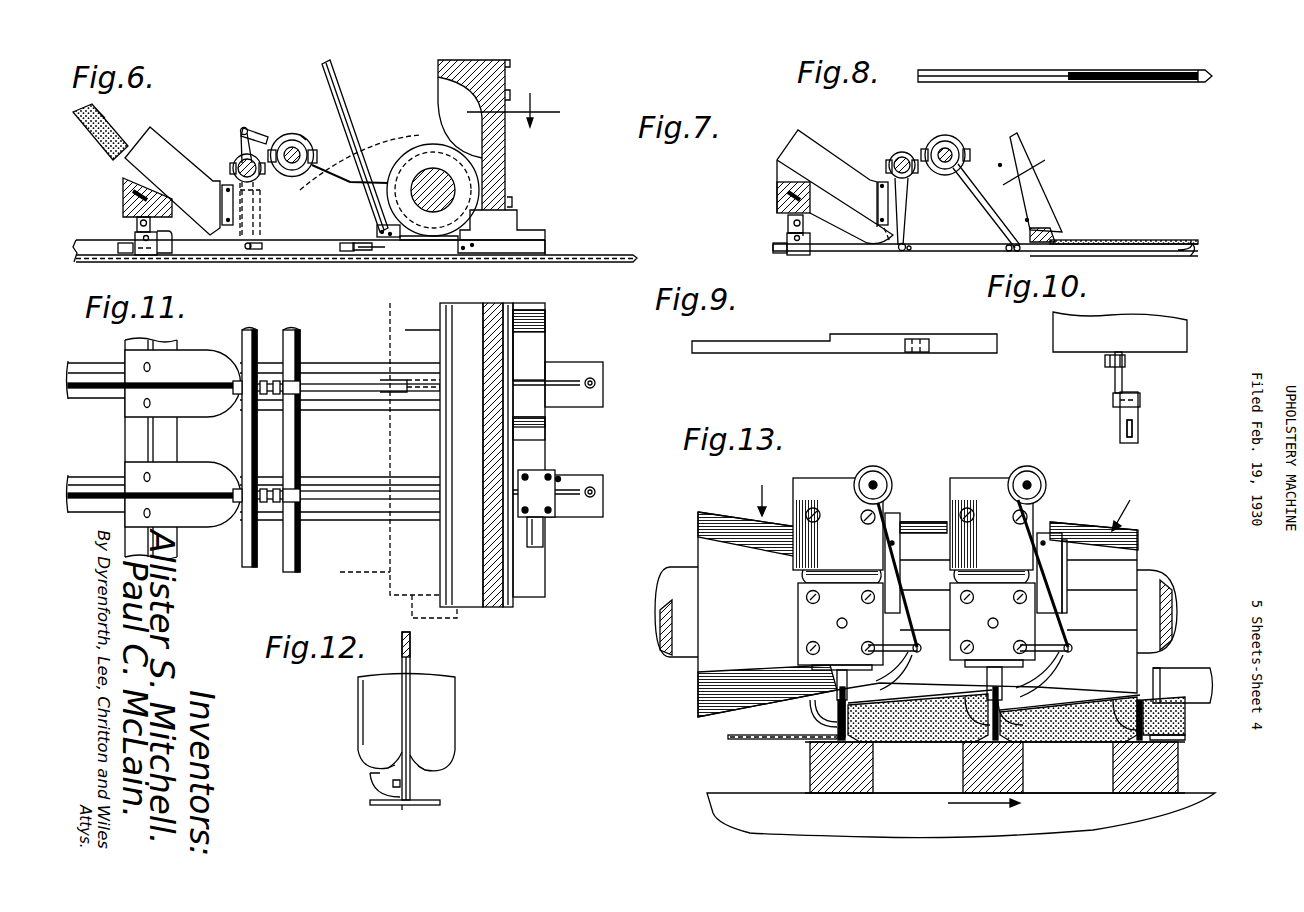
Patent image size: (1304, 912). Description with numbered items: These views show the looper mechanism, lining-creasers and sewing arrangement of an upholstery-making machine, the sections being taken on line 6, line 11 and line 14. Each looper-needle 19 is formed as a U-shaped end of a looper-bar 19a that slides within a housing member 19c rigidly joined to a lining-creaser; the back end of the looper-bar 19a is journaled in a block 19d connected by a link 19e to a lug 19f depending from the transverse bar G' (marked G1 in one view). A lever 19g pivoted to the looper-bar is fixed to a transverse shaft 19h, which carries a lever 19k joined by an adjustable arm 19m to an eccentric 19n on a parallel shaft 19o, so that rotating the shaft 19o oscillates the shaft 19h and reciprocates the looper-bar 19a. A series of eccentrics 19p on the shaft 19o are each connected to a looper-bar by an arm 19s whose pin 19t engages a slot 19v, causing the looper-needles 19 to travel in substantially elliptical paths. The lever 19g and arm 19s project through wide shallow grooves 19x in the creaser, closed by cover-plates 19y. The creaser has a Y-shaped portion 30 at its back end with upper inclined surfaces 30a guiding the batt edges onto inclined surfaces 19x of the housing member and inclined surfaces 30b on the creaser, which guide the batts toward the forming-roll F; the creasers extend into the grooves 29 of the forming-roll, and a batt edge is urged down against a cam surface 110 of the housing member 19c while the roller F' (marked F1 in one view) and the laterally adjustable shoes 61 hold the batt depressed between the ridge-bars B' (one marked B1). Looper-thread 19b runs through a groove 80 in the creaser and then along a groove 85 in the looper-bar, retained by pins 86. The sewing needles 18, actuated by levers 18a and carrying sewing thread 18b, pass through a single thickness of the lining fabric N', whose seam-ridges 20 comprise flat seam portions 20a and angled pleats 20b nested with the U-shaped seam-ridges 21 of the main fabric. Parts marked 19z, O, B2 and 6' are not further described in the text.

In FIG. 7, the looper-needle 19 is at (1167, 257).
In FIG. 6, the looper-bar 19a is at (298, 247).
In FIG. 7, the looper-bar 19a is at (930, 250).
In FIG. 10, the looper-bar 19a is at (1133, 427).
In FIG. 6, the looper-needle thread 19b is at (228, 183).
In FIG. 7, the looper-needle thread 19b is at (878, 177).
In FIG. 8, the looper-needle thread 19b is at (1210, 83).
In FIG. 7, the housing member 19c is at (1067, 240).
In FIG. 9, the housing member 19c is at (853, 341).
In FIG. 10, the housing member 19c is at (1123, 378).
In FIG. 12, the housing member 19c is at (376, 803).
In FIG. 6, the block 19d is at (137, 253).
In FIG. 7, the block 19d is at (797, 256).
In FIG. 10, the block 19d is at (1138, 424).
In FIG. 6, the link 19e is at (167, 240).
In FIG. 7, the link 19e is at (788, 233).
In FIG. 6, the lug 19f is at (137, 222).
In FIG. 7, the lug 19f is at (788, 219).
In FIG. 10, the lug 19f is at (1100, 358).
In FIG. 6, the lever 19g is at (257, 250).
In FIG. 7, the lever 19g is at (903, 218).
In FIG. 6, the shaft 19h is at (233, 166).
In FIG. 11, the shaft 19h is at (249, 560).
In FIG. 6, the lever 19k is at (243, 150).
In FIG. 7, the lever 19k is at (898, 153).
In FIG. 6, the adjustable arm 19m is at (268, 140).
In FIG. 6, the eccentric 19n is at (305, 137).
In FIG. 6, the shaft 19o is at (313, 150).
In FIG. 7, the shaft 19o is at (941, 147).
In FIG. 11, the shaft 19o is at (292, 566).
In FIG. 6, the eccentric 19p is at (340, 178).
In FIG. 7, the eccentric 19p is at (963, 142).
In FIG. 6, the arm 19s is at (400, 170).
In FIG. 7, the arm 19s is at (1027, 197).
In FIG. 6, the pin 19t is at (352, 262).
In FIG. 6, the slot 19v is at (365, 250).
In FIG. 7, the groove 19x is at (1020, 175).
In FIG. 11, the groove 19x is at (330, 385).
In FIG. 11, the cover-plate 19y is at (345, 393).
In FIG. 6, the bracket 19z is at (283, 235).
In FIG. 11, the bracket 19z is at (385, 395).
In FIG. 12, the bracket 19z is at (370, 778).
In FIG. 6, the Y-shaped portion 30 is at (155, 192).
In FIG. 11, the Y-shaped portion 30 is at (186, 419).
In FIG. 12, the Y-shaped portion 30 is at (358, 700).
In FIG. 6, the upper inclined surface 30a is at (120, 164).
In FIG. 11, the upper inclined surface 30a is at (132, 373).
In FIG. 12, the upper inclined surface 30a is at (368, 742).
In FIG. 11, the inclined surface 30b is at (372, 372).
In FIG. 12, the inclined surface 30b is at (432, 763).
In FIG. 6, the material O is at (100, 118).
In FIG. 6, the transverse bar G1 is at (133, 193).
In FIG. 6, the lining fabric N' is at (361, 148).
In FIG. 6, the section line 11 is at (514, 109).
In FIG. 6, the roller F1 is at (455, 167).
In FIG. 6, the arm B2 is at (573, 263).
In FIG. 11, the arm B2 is at (603, 385).
In FIG. 11, the ridge-bar B1 is at (603, 492).
In FIG. 11, the shoe 61 is at (540, 352).
In FIG. 13, the shoe 61 is at (920, 743).
In FIG. 11, the section line 6 is at (556, 474).
In FIG. 13, the section line 6 is at (930, 525).
In FIG. 11, the head plate 6' is at (562, 534).
In FIG. 6, the cam surface 110 is at (422, 247).
In FIG. 9, the cam surface 110 is at (983, 353).
In FIG. 11, the cam surface 110 is at (410, 330).
In FIG. 7, the groove 80 is at (888, 200).
In FIG. 8, the groove 85 is at (963, 82).
In FIG. 8, the pin 86 is at (1133, 80).
In FIG. 10, the transverse bar G' is at (1098, 332).
In FIG. 13, the forming-roll F is at (935, 505).
In FIG. 11, the roller F' is at (406, 460).
In FIG. 13, the roller F' is at (921, 614).
In FIG. 13, the sewing needle 18 is at (842, 687).
In FIG. 13, the lever 18a is at (883, 682).
In FIG. 13, the sewing thread 18b is at (898, 588).
In FIG. 13, the seam-ridge 20 is at (995, 686).
In FIG. 13, the flat seam portion 20a is at (1155, 692).
In FIG. 13, the pleat 20b is at (1140, 693).
In FIG. 13, the U-shape seam-ridge 21 is at (1175, 710).
In FIG. 13, the groove 29 is at (832, 690).
In FIG. 12, the ridge-bar B' is at (430, 821).
In FIG. 13, the ridge-bar B' is at (981, 767).
In FIG. 13, the section line 14 is at (985, 794).